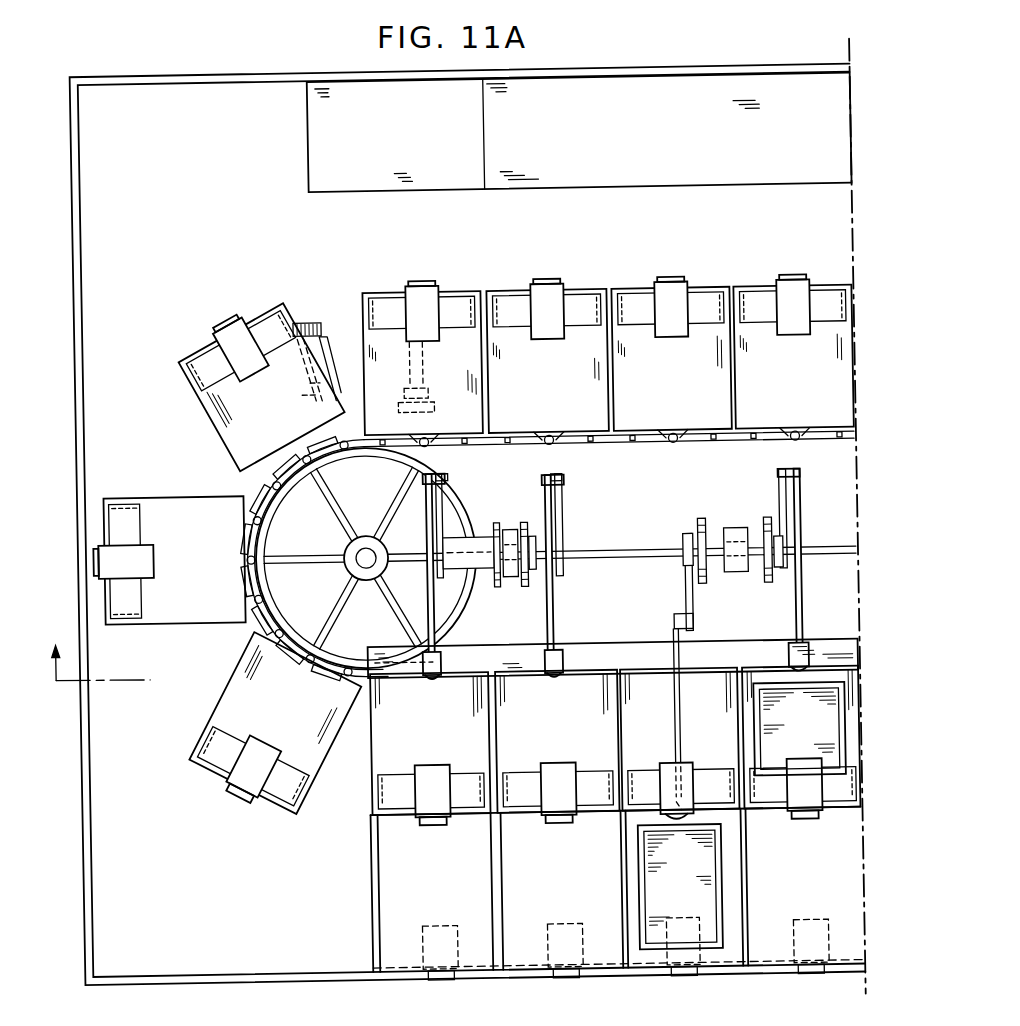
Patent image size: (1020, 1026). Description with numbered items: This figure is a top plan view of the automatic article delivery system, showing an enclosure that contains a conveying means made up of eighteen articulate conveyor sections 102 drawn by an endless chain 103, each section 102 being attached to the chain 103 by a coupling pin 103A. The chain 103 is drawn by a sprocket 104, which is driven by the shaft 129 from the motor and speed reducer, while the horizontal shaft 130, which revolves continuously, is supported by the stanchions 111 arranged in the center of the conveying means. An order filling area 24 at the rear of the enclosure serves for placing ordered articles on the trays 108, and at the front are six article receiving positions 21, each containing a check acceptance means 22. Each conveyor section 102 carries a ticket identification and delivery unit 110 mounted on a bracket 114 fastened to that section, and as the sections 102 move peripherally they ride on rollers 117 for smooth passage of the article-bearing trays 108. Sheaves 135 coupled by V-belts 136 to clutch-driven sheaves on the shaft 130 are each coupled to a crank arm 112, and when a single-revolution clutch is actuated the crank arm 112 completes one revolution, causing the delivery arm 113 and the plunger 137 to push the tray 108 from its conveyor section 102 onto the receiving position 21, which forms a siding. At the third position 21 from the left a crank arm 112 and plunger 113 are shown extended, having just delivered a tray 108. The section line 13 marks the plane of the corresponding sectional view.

The section line 13— 13 is at (95, 649).
The article receiving position 21 is at (418, 900).
The check acceptance means 22 is at (439, 982).
The order filling area 24 is at (647, 154).
The articulate conveyor section 102 is at (296, 302).
The endless chain 103 is at (576, 444).
The coupling pin 103A is at (673, 449).
The sprocket 104 is at (353, 510).
The tray 108 is at (749, 723).
The ticket identification and delivery unit 110 is at (429, 285).
The stanchion 111 is at (510, 529).
The crank arm 112 is at (541, 496).
The delivery plunger 113 is at (812, 501).
The bracket 114 is at (474, 300).
The roller 117 is at (320, 319).
The shaft 129 is at (365, 570).
The horizontal shaft 130 is at (603, 550).
The sheave 135 is at (695, 524).
The V-belt 136 is at (656, 551).
The plunger 137 is at (437, 664).